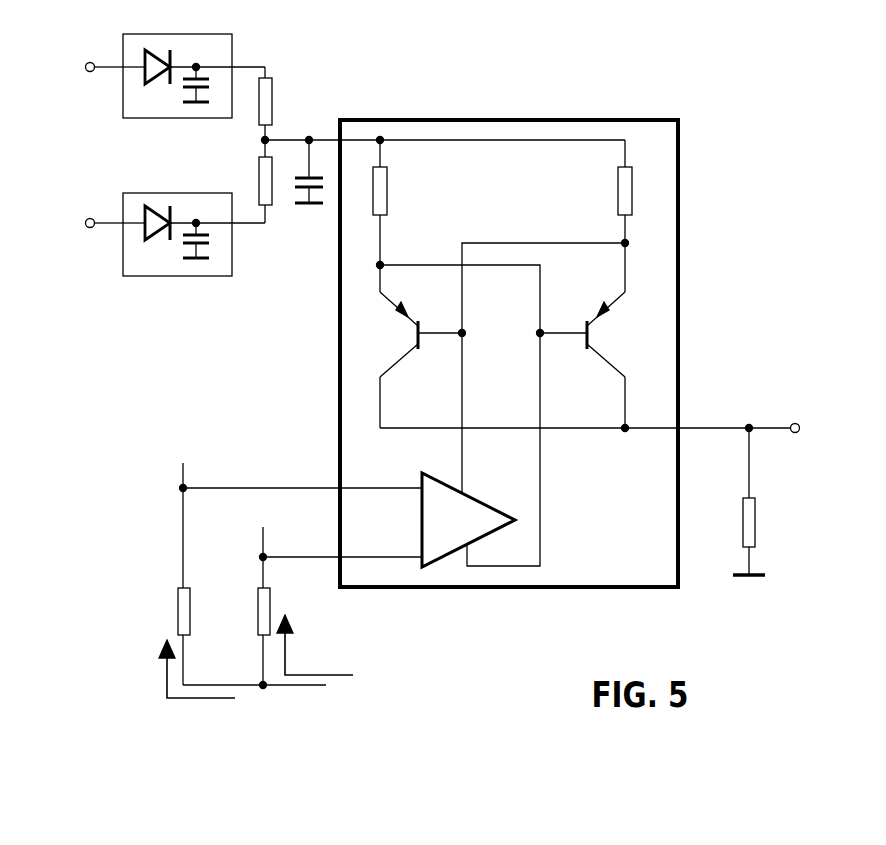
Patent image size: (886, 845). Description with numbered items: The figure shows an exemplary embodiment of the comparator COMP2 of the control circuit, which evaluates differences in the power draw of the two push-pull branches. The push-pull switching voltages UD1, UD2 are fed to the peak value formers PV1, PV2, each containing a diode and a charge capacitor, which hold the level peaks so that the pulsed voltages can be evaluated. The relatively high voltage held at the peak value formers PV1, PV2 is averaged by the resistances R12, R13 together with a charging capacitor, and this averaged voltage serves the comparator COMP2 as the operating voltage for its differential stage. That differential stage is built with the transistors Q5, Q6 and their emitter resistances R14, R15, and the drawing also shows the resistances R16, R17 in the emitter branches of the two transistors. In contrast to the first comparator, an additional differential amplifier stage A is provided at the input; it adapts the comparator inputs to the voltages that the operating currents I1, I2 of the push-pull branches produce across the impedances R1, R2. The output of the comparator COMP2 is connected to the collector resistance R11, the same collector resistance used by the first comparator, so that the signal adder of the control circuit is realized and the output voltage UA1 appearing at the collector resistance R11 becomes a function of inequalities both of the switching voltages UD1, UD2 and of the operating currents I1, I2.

The peak value former PV1 is at (177, 60).
The peak value former PV2 is at (177, 222).
The switching voltage UD1 is at (78, 75).
The switching voltage UD2 is at (78, 231).
The resistance R12 is at (282, 105).
The resistance R13 is at (273, 198).
The comparator COMP2 is at (509, 330).
The emitter resistance R14 is at (414, 216).
The emitter resistance R15 is at (584, 216).
The transistor Q5 is at (409, 334).
The transistor Q6 is at (601, 334).
The resistor R16 is at (414, 400).
The resistor R17 is at (591, 400).
The differential amplifier stage A is at (468, 520).
The collector resistance R11 is at (726, 501).
The output voltage UA1 is at (804, 516).
The impedance R1 is at (274, 574).
The impedance R2 is at (320, 608).
The operating current I1 is at (184, 669).
The operating current I2 is at (315, 645).